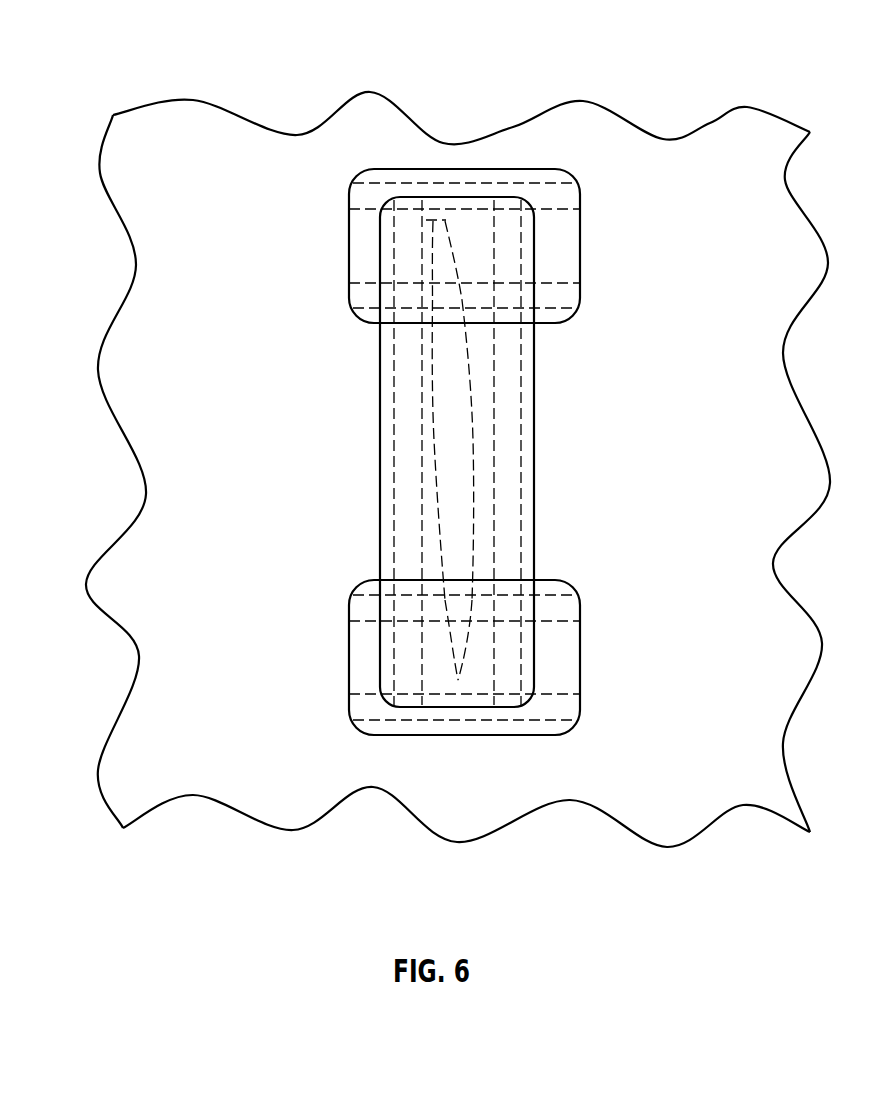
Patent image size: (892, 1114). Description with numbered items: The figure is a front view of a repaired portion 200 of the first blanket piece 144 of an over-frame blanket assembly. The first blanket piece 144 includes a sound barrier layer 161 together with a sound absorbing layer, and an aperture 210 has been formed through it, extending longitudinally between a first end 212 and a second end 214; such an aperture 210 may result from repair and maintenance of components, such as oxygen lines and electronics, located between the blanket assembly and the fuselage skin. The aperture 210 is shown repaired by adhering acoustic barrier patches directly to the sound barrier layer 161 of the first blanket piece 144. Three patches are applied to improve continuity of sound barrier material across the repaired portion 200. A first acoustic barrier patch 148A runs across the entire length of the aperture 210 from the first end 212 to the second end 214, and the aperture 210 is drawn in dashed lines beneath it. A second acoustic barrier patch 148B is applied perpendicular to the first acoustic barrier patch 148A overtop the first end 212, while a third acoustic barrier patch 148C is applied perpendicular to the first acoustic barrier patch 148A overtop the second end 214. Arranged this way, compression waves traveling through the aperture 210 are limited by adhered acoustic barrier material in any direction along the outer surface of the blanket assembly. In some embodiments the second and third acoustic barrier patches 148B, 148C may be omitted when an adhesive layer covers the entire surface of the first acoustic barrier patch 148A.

The repaired portion 200 is at (430, 430).
The first blanket piece 144 is at (158, 103).
The sound barrier layer 161 is at (113, 187).
The first acoustic barrier patch 148A is at (380, 487).
The second acoustic barrier patch 148B is at (347, 247).
The third acoustic barrier patch 148C is at (349, 658).
The aperture 210 is at (430, 437).
The first end 212 is at (442, 220).
The second end 214 is at (458, 680).